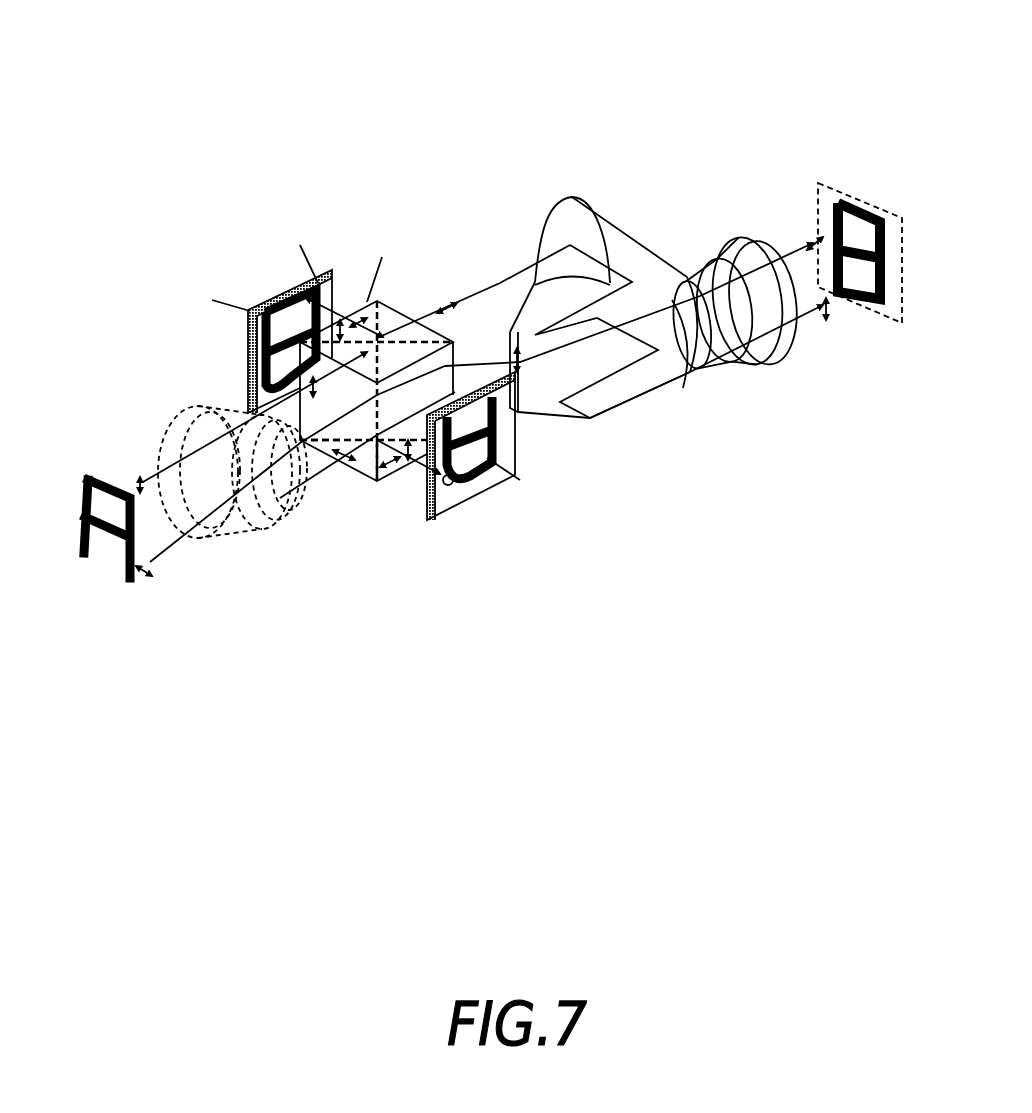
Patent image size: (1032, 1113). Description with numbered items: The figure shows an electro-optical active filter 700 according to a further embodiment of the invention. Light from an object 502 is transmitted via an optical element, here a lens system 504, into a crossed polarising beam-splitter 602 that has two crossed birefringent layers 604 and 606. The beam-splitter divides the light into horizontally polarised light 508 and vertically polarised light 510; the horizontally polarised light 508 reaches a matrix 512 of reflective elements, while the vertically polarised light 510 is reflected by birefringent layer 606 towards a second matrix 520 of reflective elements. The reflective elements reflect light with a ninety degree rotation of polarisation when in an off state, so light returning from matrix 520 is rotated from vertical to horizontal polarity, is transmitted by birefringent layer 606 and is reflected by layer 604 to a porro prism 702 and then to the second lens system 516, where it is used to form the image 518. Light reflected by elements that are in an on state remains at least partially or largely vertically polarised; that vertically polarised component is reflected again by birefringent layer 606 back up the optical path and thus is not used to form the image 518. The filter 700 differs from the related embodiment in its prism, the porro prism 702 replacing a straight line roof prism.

The electro-optical active filter 700 is at (482, 105).
The object 502 is at (83, 476).
The lens system 504 is at (202, 520).
The horizontally polarised light 508 is at (167, 560).
The vertically polarised light 510 is at (150, 470).
The matrix 512 is at (463, 503).
The second lens system 516 is at (790, 342).
The image 518 is at (827, 190).
The matrix 520 is at (320, 273).
The crossed polarising beam-splitter 602 is at (387, 313).
The birefringent layer 604 is at (330, 442).
The birefringent layer 606 is at (372, 470).
The porro prism 702 is at (613, 227).